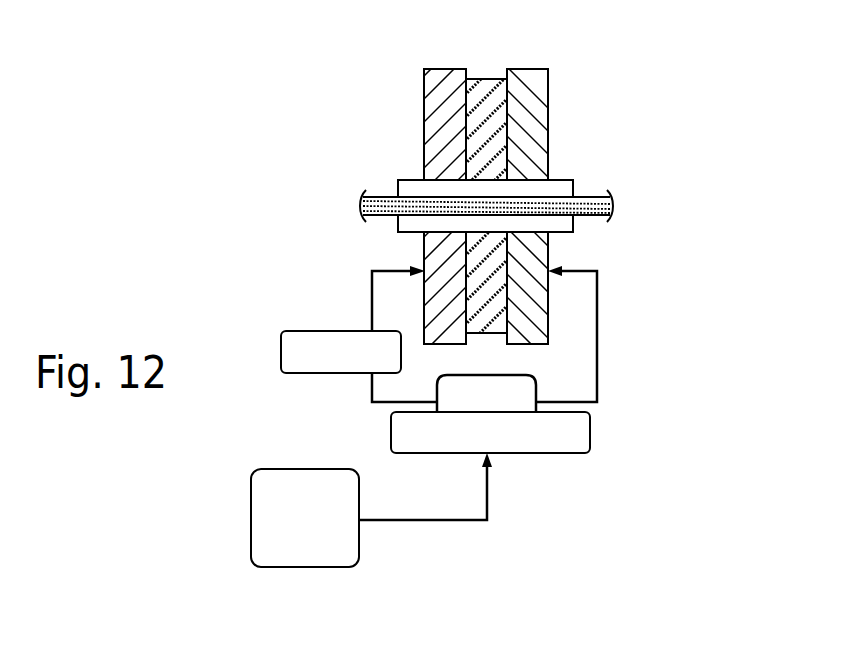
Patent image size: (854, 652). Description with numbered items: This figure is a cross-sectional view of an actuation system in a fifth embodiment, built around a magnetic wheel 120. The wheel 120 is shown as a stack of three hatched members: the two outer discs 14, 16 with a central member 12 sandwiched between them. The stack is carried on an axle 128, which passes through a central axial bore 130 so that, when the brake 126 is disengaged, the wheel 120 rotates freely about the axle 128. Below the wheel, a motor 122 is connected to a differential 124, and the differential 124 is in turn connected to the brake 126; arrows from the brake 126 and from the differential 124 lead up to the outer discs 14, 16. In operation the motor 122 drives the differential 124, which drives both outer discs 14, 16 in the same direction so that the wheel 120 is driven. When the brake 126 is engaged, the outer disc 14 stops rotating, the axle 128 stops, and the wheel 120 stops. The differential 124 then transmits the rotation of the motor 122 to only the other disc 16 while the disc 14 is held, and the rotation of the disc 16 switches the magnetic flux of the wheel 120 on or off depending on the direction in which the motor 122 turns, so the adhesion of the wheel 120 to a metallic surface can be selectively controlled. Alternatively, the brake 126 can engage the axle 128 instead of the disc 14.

The wheel 120 is at (280, 100).
The outer disc 14 is at (432, 68).
The friction member 12 is at (485, 77).
The outer disc 16 is at (532, 68).
The central axial bore 130 is at (560, 180).
The axle 128 is at (610, 203).
The brake 126 is at (310, 330).
The differential 124 is at (590, 430).
The motor 122 is at (290, 469).